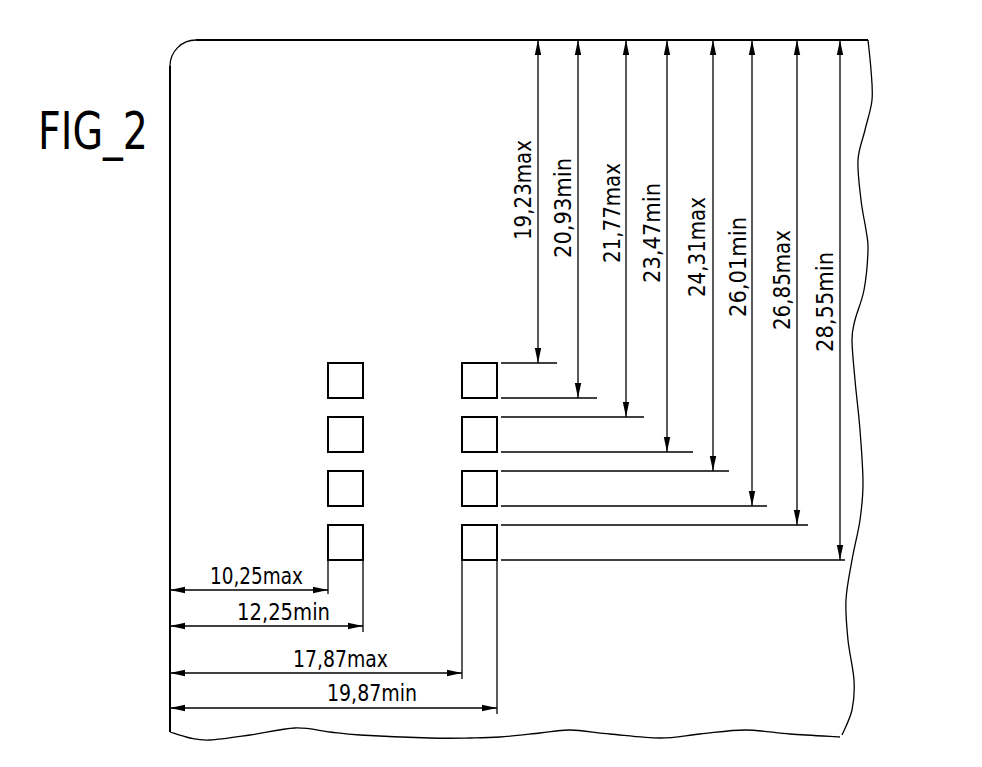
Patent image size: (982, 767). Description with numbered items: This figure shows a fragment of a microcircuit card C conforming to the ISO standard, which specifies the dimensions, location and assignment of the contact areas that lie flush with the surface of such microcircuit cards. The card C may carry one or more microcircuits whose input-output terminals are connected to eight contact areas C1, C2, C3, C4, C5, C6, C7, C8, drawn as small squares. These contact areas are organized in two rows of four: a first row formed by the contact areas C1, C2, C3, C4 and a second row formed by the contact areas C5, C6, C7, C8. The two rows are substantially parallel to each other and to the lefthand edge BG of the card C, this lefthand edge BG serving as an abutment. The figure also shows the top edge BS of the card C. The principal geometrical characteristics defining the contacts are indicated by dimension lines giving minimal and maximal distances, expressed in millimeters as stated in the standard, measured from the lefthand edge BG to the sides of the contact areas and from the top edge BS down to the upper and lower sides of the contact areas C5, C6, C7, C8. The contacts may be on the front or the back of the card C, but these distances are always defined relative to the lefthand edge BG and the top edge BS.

The card C is at (378, 50).
The top edge BS is at (686, 40).
The lefthand edge BG is at (170, 360).
The contact area C1 is at (355, 362).
The contact area C2 is at (363, 420).
The contact area C3 is at (363, 477).
The contact area C4 is at (363, 534).
The contact area C5 is at (472, 363).
The contact area C6 is at (462, 431).
The contact area C7 is at (462, 486).
The contact area C8 is at (462, 541).